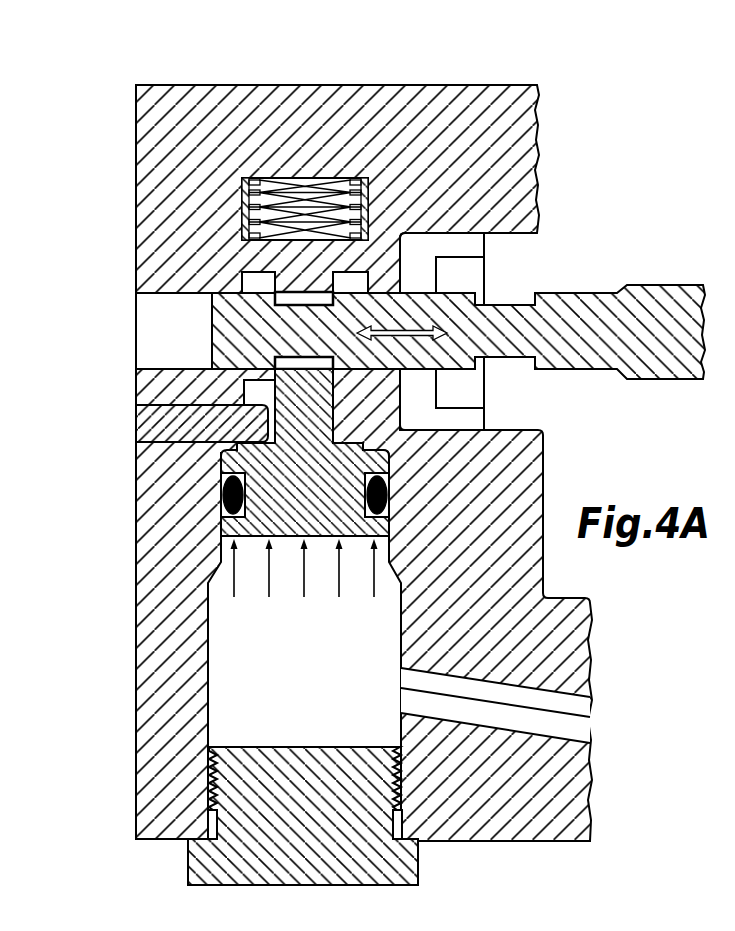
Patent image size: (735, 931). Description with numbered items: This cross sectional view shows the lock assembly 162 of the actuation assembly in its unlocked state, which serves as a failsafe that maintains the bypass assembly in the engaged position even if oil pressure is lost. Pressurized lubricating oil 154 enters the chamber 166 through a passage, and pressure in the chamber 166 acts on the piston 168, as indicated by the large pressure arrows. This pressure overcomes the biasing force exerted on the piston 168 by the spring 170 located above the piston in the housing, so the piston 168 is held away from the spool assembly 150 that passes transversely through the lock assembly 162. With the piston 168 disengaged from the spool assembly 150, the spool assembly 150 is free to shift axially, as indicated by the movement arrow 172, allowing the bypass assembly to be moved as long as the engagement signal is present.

The spool assembly 150 is at (600, 311).
The pressurized lubricating oil 154 is at (358, 684).
The lock assembly 162 is at (572, 218).
The chamber 166 is at (287, 651).
The piston 168 is at (388, 466).
The spring 170 is at (325, 182).
The movement arrow 172 is at (412, 333).